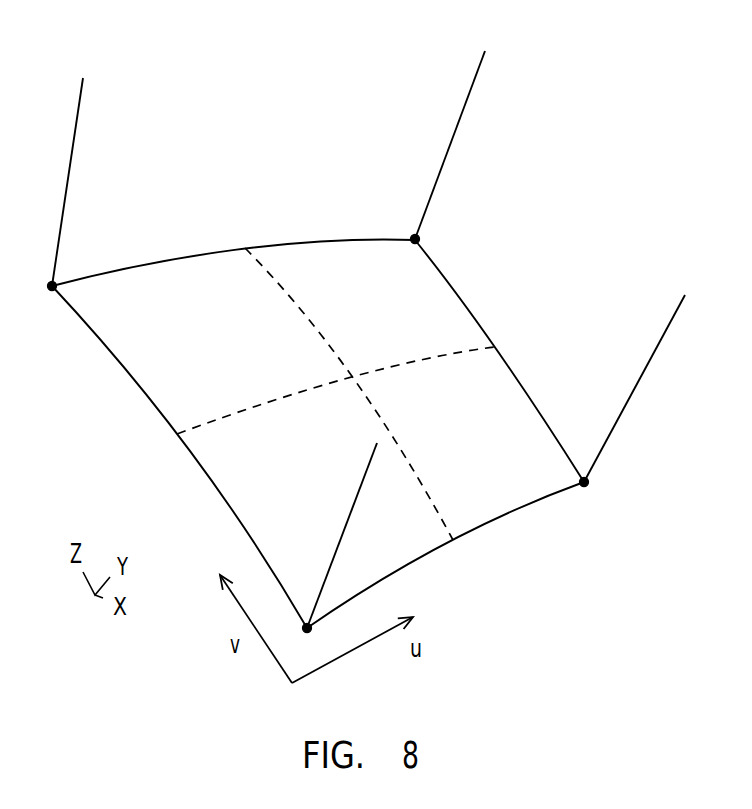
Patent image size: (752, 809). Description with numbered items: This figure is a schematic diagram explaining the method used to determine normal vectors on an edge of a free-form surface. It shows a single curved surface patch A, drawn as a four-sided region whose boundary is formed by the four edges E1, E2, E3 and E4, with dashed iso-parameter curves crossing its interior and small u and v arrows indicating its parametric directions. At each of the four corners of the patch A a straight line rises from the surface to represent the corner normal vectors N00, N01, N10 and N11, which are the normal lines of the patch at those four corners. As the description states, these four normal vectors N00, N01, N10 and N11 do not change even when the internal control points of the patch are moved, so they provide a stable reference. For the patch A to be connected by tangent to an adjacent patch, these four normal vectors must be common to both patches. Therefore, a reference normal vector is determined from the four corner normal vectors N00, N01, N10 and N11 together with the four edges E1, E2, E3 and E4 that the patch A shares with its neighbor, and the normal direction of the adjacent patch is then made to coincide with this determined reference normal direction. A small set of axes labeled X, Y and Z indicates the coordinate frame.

The patch A is at (320, 416).
The edge E1 is at (433, 553).
The edge E2 is at (492, 330).
The edge E3 is at (222, 250).
The edge E4 is at (188, 457).
The normal vector N00 is at (352, 518).
The normal vector N01 is at (78, 132).
The normal vector N10 is at (660, 343).
The normal vector N11 is at (468, 100).